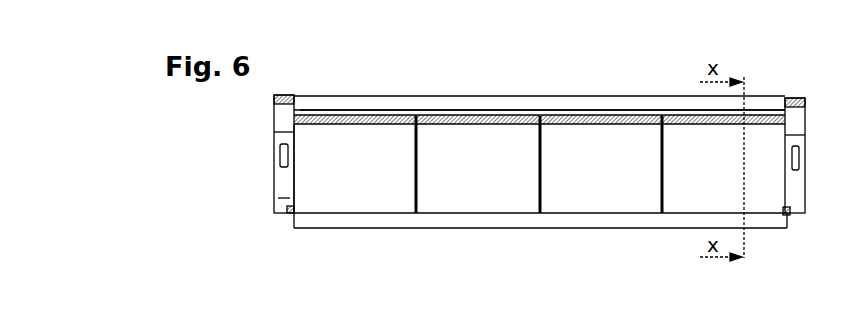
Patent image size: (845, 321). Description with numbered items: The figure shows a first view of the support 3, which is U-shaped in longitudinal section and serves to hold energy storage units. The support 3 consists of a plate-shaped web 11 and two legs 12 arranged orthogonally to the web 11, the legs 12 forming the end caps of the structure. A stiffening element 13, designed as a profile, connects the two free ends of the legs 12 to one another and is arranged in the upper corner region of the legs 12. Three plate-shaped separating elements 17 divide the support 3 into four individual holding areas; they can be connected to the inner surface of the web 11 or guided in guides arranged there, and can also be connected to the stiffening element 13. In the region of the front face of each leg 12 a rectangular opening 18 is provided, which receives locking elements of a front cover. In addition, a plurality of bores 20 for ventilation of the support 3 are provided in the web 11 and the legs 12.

The support 3 is at (358, 135).
The web 11 is at (471, 177).
The legs 12 is at (277, 200).
The stiffening element 13 is at (547, 110).
The separating elements 17 is at (413, 182).
The rectangular opening 18 is at (276, 158).
The bores 20 is at (457, 117).